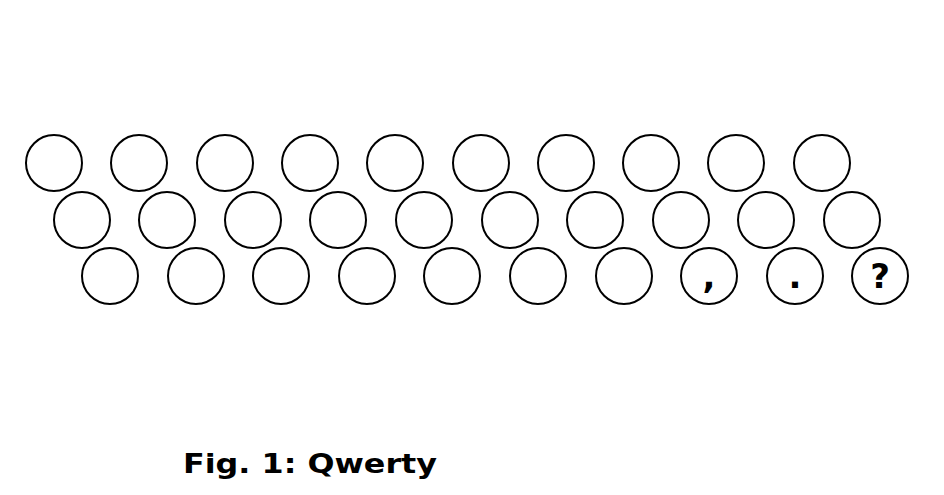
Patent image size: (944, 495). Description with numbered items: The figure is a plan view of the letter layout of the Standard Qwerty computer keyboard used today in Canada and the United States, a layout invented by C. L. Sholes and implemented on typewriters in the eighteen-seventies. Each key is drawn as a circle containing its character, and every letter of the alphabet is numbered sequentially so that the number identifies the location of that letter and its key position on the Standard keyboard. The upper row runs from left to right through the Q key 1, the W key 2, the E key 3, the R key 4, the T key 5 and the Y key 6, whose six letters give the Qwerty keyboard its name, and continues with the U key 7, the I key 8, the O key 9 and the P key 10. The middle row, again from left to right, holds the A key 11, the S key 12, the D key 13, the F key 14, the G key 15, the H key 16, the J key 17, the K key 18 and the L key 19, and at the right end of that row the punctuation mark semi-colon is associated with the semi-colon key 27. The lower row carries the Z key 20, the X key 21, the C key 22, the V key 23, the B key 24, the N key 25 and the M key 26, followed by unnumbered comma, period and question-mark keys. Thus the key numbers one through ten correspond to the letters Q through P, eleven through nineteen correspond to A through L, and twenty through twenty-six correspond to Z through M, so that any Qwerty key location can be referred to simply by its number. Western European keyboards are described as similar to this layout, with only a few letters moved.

The Q key position 1 is at (54, 135).
The W key position 2 is at (139, 135).
The E key position 3 is at (225, 135).
The R key position 4 is at (310, 135).
The T key position 5 is at (395, 135).
The Y key position 6 is at (481, 135).
The U key position 7 is at (566, 135).
The I key position 8 is at (651, 135).
The O key position 9 is at (736, 135).
The P key position 10 is at (822, 135).
The A key position 11 is at (96, 194).
The S key position 12 is at (181, 194).
The D key position 13 is at (267, 194).
The F key position 14 is at (352, 194).
The G key position 15 is at (437, 194).
The H key position 16 is at (523, 194).
The J key position 17 is at (609, 194).
The K key position 18 is at (695, 194).
The L key position 19 is at (781, 194).
The Z key position 20 is at (110, 304).
The X key position 21 is at (196, 304).
The C key position 22 is at (281, 304).
The V key position 23 is at (367, 304).
The B key position 24 is at (452, 304).
The N key position 25 is at (538, 304).
The M key position 26 is at (624, 304).
The semi-colon key position 27 is at (838, 245).